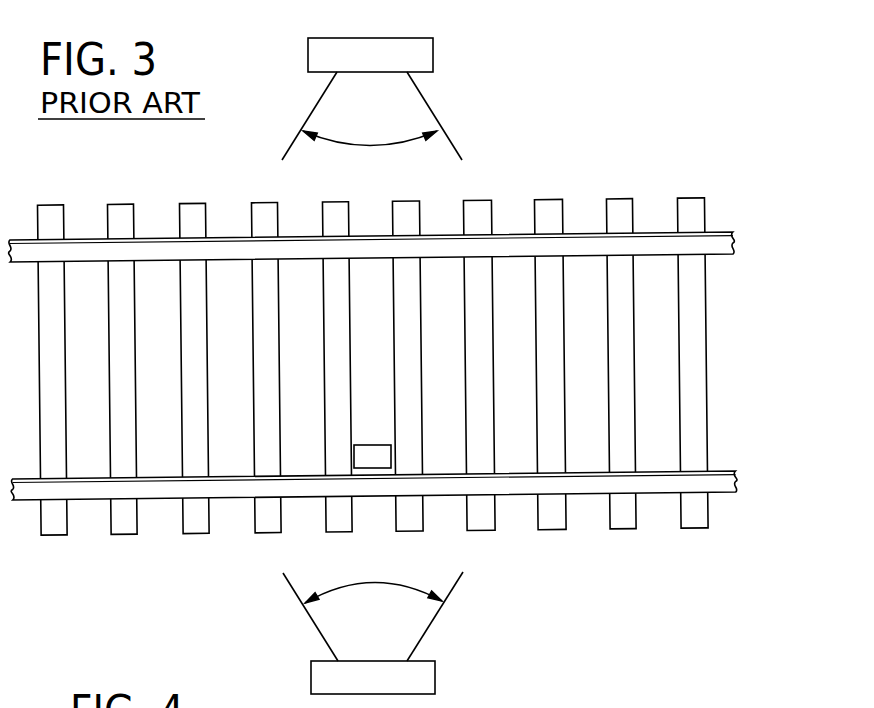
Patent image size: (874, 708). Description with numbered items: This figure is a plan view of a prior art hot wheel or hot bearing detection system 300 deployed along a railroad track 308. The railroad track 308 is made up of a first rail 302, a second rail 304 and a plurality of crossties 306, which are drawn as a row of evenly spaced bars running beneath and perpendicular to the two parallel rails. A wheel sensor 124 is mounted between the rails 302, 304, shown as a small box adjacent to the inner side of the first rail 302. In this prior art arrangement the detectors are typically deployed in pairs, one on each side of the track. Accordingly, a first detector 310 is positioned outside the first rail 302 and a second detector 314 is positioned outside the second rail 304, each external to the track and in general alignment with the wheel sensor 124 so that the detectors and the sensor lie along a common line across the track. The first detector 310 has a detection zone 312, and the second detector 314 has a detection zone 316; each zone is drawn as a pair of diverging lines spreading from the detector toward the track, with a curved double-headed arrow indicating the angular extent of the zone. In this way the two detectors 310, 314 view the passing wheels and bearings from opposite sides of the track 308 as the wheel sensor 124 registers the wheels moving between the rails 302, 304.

The prior art track monitoring system 300 is at (627, 70).
The rail 302 is at (381, 452).
The second rail 304 is at (710, 255).
The crossties 306 is at (692, 393).
The railroad track 308 is at (406, 366).
The first detector 310 is at (435, 668).
The detection zone 312 is at (403, 590).
The second detector 314 is at (434, 57).
The detection zone 316 is at (413, 137).
The wheel sensor 124 is at (384, 445).